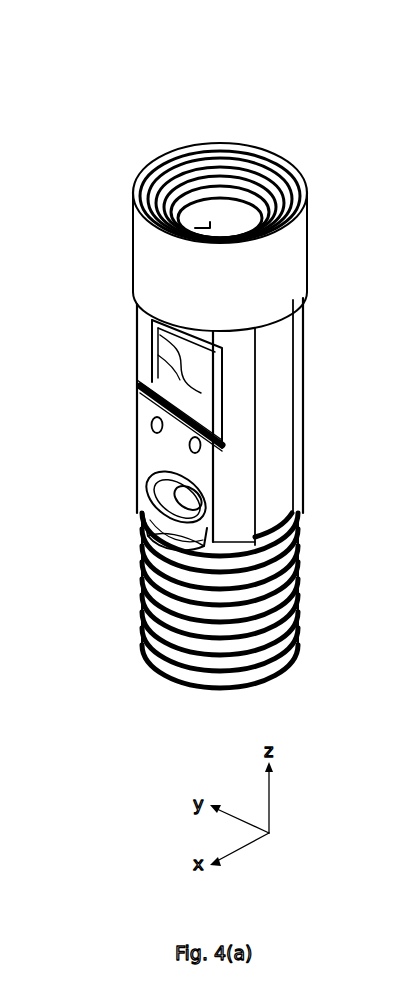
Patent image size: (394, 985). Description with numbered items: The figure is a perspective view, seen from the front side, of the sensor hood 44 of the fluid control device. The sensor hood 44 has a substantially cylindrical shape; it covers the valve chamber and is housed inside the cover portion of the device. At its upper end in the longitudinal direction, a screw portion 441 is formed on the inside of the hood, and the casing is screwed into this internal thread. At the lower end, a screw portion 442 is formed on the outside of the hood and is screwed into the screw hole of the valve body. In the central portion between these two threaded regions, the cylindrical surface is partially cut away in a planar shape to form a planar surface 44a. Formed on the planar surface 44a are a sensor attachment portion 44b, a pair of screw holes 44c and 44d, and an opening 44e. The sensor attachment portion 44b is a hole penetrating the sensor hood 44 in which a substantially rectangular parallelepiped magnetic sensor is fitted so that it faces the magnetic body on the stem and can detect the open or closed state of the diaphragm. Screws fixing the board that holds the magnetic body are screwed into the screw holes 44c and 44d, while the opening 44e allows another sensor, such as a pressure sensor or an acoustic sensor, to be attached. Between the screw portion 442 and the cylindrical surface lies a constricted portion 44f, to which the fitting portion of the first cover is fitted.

The sensor hood 44 is at (265, 113).
The screw portion 441 is at (152, 165).
The screw portion 442 is at (145, 640).
The planar surface 44a is at (195, 473).
The sensor attachment portion 44b is at (150, 340).
The screw hole 44c is at (152, 424).
The screw hole 44d is at (188, 445).
The opening 44e is at (143, 504).
The constricted portion 44f is at (143, 540).